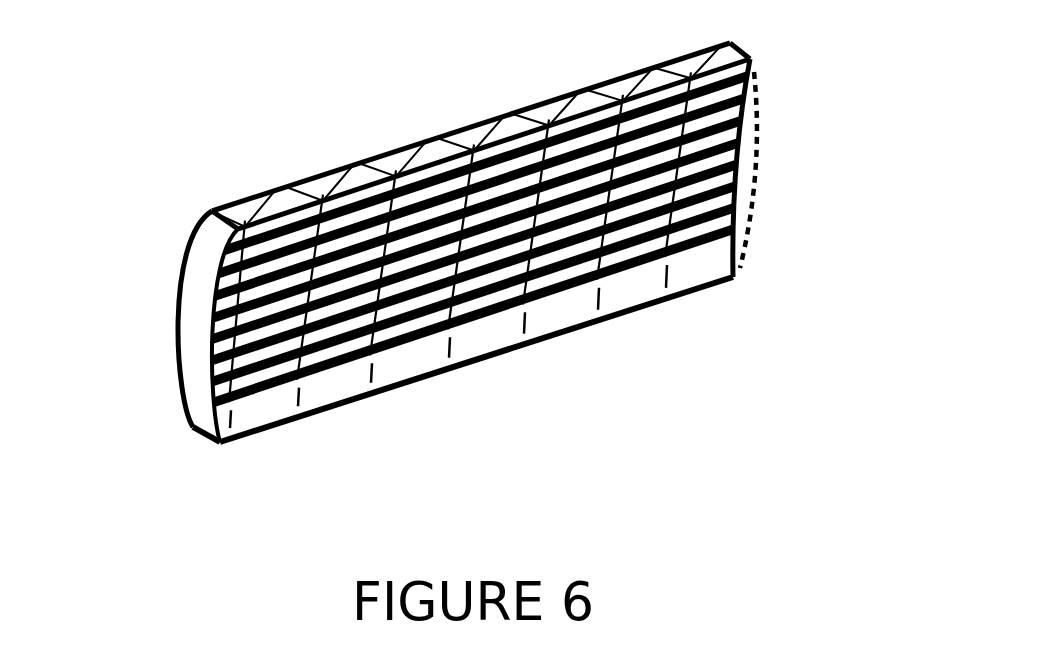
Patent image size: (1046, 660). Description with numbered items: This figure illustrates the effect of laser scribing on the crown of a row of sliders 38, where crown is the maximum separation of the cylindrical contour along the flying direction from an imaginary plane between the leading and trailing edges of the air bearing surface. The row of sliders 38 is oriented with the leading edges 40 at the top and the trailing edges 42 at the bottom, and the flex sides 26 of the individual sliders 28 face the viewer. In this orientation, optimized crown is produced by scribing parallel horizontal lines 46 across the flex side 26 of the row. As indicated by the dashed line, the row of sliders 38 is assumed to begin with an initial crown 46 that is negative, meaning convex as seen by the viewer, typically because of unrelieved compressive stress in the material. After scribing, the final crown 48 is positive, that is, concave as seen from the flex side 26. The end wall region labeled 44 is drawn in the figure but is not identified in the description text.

The flex side 26 is at (392, 365).
The slider 28 is at (333, 181).
The row of sliders 38 is at (648, 348).
The leading edge 40 is at (530, 115).
The trailing edge 42 is at (591, 340).
The left end wall 44 is at (205, 298).
The initial crown 46 is at (778, 168).
The final crown 48 is at (752, 110).